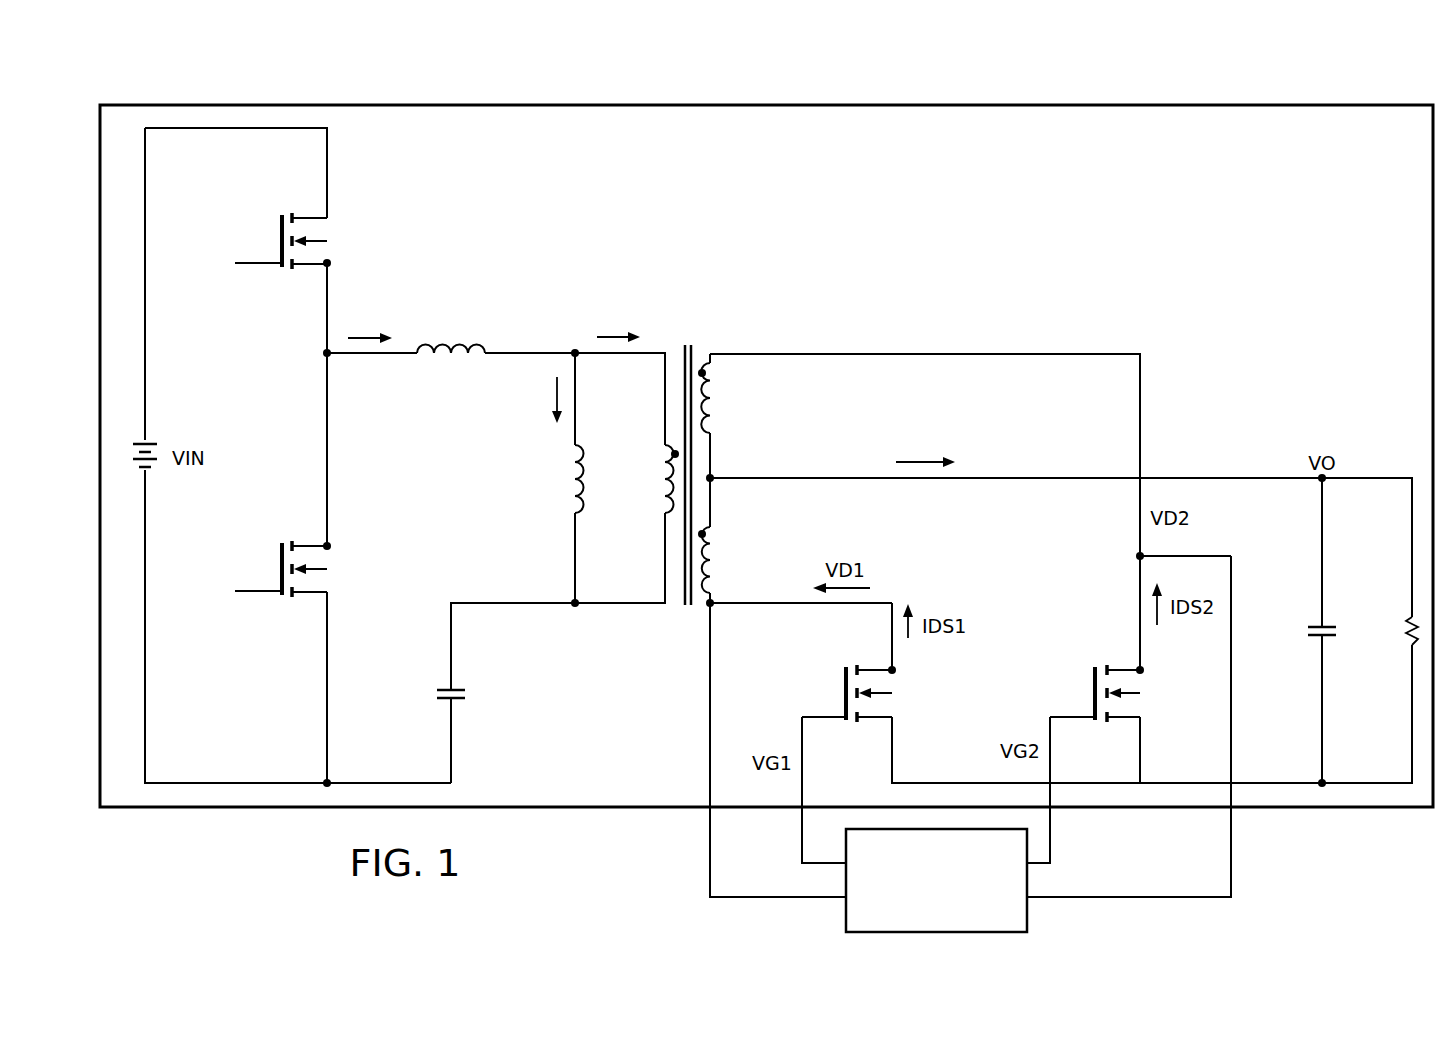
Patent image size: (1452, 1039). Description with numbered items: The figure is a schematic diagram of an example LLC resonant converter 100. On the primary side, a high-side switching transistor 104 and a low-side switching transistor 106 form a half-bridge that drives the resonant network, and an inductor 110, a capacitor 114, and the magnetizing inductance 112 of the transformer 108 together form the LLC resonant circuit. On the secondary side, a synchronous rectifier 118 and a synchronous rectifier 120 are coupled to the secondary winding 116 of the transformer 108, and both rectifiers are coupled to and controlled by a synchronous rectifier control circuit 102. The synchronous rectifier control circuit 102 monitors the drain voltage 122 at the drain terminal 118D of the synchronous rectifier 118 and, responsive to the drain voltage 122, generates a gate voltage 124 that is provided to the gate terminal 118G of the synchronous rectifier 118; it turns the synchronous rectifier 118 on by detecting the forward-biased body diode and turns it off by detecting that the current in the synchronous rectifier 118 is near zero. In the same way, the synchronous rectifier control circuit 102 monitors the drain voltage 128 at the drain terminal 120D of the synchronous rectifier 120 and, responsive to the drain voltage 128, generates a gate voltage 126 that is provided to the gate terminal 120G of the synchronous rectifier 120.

The LLC resonant converter 100 is at (318, 78).
The synchronous rectifier control circuit 102 is at (1028, 920).
The high-side switching transistor 104 is at (279, 228).
The low-side switching transistor 106 is at (279, 557).
The transformer 108 is at (717, 438).
The inductor 110 is at (441, 335).
The magnetizing inductance 112 is at (591, 470).
The capacitor 114 is at (440, 694).
The secondary winding 116 is at (700, 390).
The synchronous rectifier 118 is at (801, 689).
The drain terminal 118D is at (892, 658).
The gate terminal 118G is at (836, 719).
The synchronous rectifier 120 is at (1124, 665).
The drain terminal 120D is at (1140, 658).
The gate terminal 120G is at (1085, 719).
The drain voltage 122 is at (710, 852).
The gate voltage 124 is at (802, 834).
The gate voltage 126 is at (1051, 836).
The drain voltage 128 is at (1232, 850).